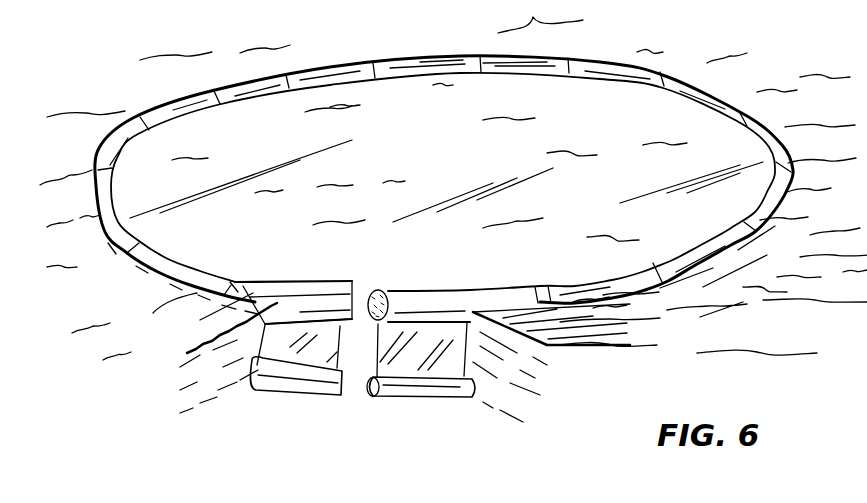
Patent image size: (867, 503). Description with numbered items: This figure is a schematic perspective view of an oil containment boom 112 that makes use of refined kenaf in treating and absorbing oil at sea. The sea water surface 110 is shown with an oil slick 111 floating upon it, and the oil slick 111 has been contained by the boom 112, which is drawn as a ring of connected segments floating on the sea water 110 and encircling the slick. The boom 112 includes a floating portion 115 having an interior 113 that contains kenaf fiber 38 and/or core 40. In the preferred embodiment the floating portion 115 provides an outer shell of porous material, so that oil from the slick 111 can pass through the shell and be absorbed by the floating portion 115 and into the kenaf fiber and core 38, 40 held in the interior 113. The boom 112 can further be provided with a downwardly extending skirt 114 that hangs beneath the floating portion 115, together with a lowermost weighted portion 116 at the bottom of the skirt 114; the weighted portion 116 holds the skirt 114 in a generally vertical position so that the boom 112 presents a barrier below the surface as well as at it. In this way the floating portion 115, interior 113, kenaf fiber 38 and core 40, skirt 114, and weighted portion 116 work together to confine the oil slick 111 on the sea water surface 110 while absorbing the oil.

The sea water surface 110 is at (148, 92).
The oil slick 111 is at (416, 146).
The oil containment boom 112 is at (117, 136).
The interior 113 is at (375, 292).
The skirt 114 is at (327, 352).
The floating portion 115 is at (236, 278).
The lowermost weighted portion 116 is at (290, 373).
The kenaf fiber 38 is at (294, 264).
The core 40 is at (354, 300).